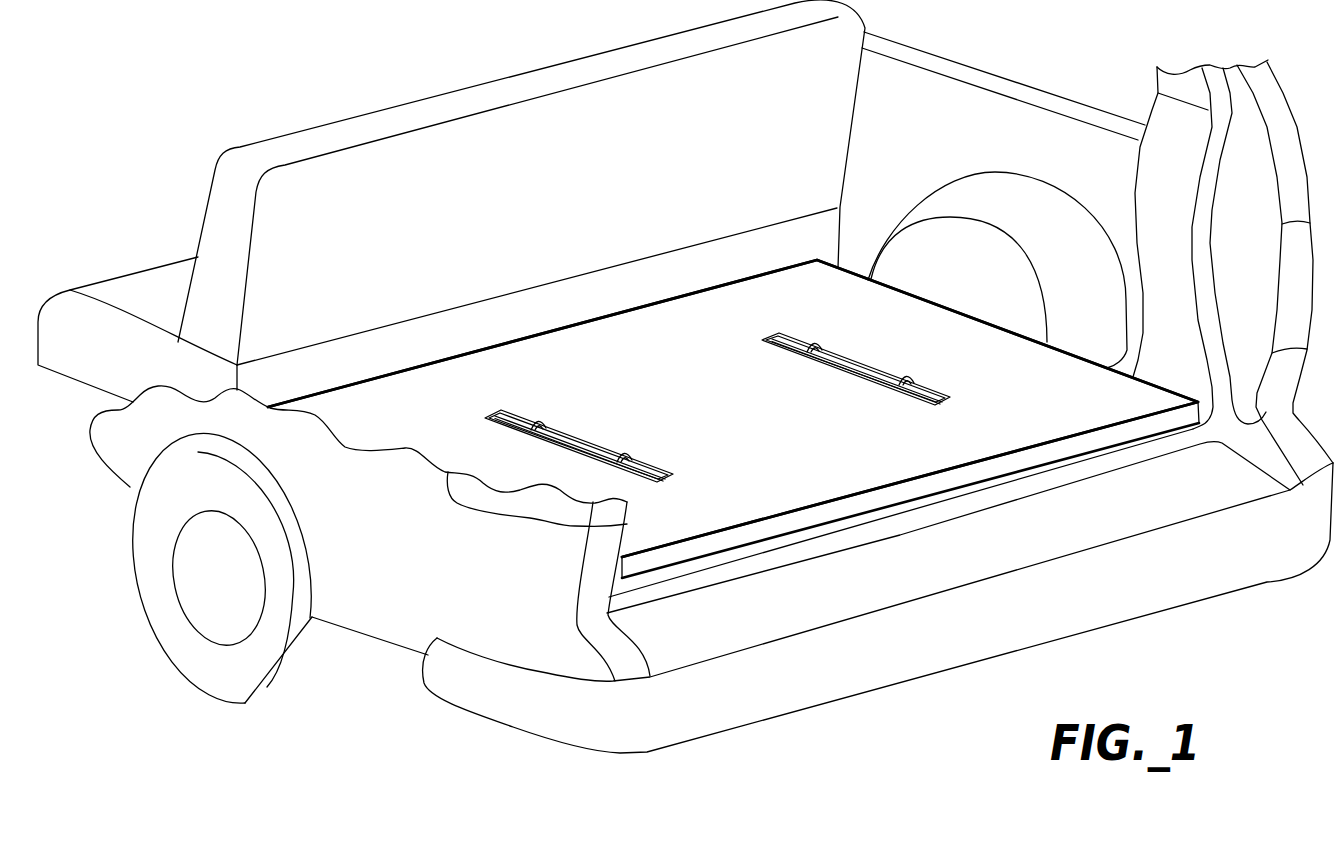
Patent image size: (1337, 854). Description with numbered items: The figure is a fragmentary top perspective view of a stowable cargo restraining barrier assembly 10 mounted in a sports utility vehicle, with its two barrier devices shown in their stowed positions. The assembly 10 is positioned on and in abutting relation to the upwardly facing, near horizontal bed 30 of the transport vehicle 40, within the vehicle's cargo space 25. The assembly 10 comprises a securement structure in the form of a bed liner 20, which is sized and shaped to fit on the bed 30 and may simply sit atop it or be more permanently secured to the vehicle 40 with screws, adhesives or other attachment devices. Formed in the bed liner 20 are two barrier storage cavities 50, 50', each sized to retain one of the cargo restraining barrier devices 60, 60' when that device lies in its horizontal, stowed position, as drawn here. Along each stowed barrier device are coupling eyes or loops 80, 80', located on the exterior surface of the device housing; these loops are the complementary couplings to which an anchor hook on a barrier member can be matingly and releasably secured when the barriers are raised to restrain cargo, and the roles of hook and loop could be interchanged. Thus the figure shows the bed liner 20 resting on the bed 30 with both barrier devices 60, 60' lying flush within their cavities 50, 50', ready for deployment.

The stowable cargo restraining barrier assembly 10 is at (752, 260).
The bed liner 20 is at (1065, 430).
The cargo space 25 is at (955, 103).
The bed 30 is at (688, 560).
The transport vehicle 40 is at (408, 618).
The barrier storage cavity 50 is at (606, 463).
The barrier storage cavity 50' is at (889, 387).
The cargo restraining barrier device 60 is at (580, 441).
The cargo restraining barrier device 60' is at (857, 364).
The coupling loop 80 is at (577, 425).
The coupling loop 80' is at (857, 347).